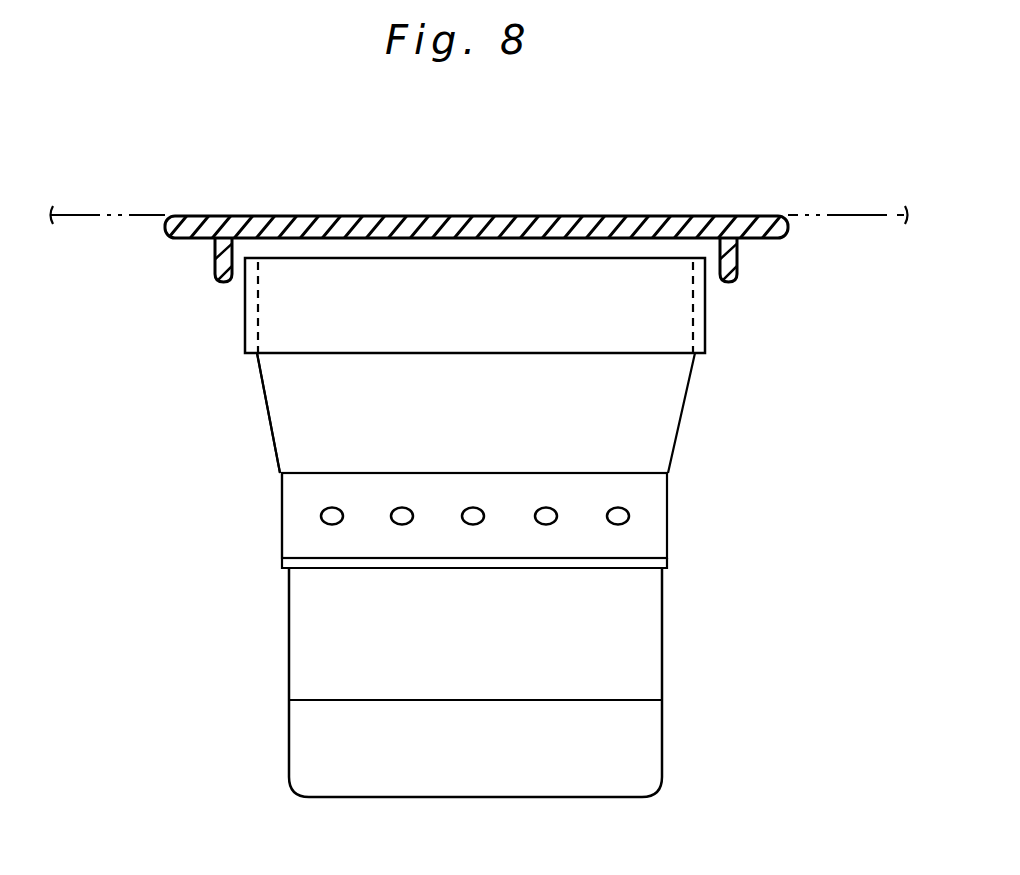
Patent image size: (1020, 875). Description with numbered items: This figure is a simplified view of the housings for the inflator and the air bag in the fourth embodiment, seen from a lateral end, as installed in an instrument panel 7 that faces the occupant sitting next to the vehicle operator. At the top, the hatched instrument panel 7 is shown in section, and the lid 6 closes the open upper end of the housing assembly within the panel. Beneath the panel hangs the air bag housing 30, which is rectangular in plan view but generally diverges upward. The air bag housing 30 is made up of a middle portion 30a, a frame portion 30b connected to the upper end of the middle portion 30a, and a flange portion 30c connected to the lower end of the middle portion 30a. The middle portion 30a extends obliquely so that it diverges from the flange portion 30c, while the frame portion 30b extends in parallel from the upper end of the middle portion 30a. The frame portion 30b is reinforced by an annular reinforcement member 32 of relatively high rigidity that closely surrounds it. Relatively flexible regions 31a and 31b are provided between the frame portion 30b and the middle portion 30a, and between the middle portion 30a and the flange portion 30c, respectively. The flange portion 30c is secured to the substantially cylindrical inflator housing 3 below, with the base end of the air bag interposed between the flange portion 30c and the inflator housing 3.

The inflator housing 3 is at (290, 655).
The lid 6 is at (490, 216).
The instrument panel 7 is at (140, 215).
The air bag housing 30 is at (121, 358).
The middle portion 30a is at (263, 398).
The frame portion 30b is at (253, 314).
The flange portion 30c is at (282, 500).
The flexible region 31a is at (696, 357).
The flexible region 31b is at (674, 472).
The annular reinforcement member 32 is at (705, 322).